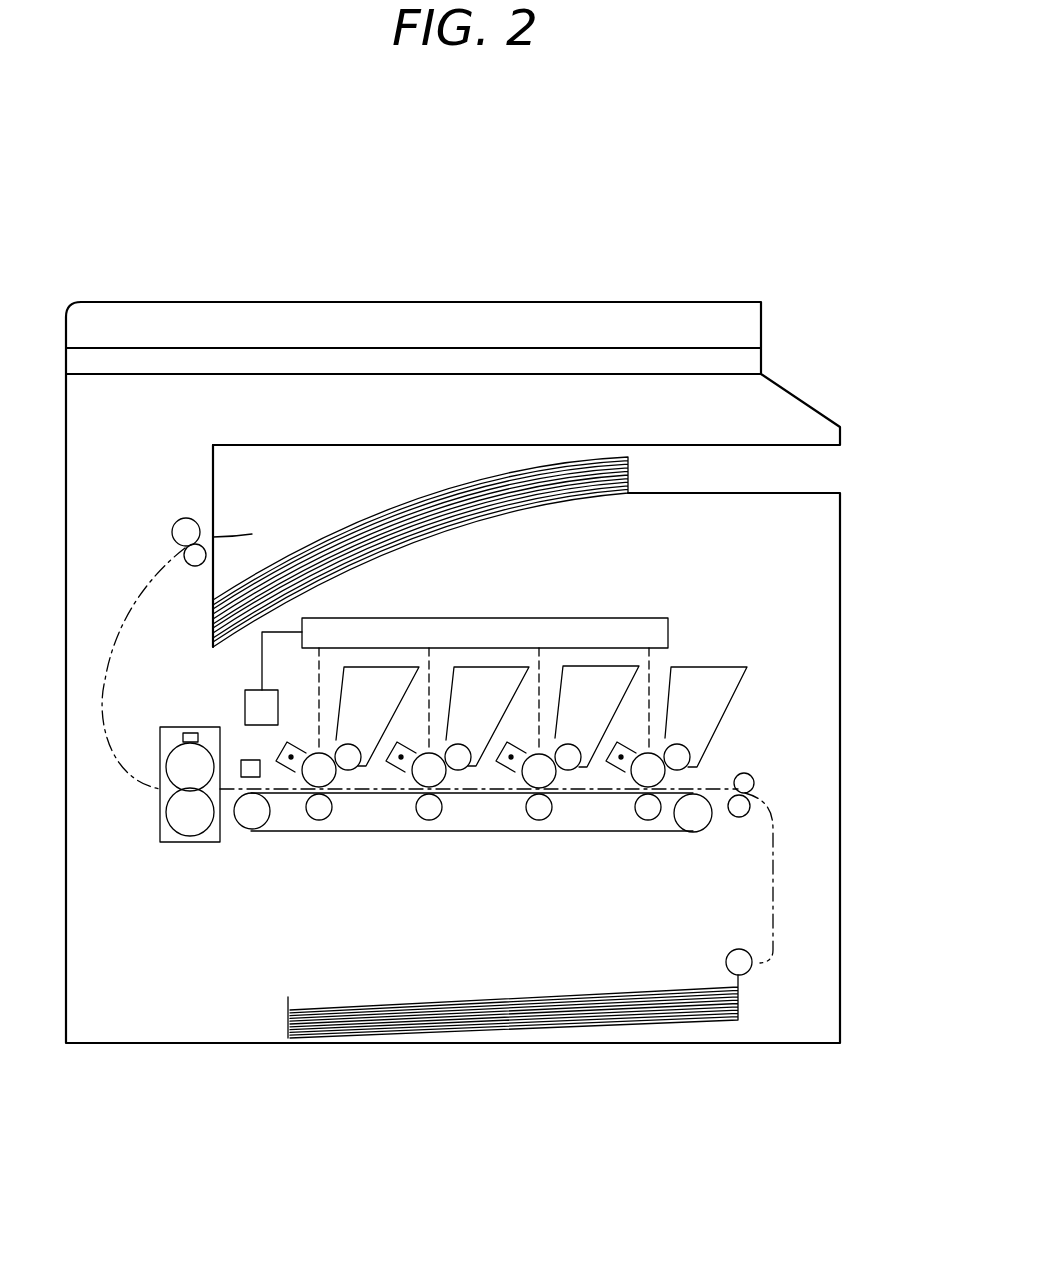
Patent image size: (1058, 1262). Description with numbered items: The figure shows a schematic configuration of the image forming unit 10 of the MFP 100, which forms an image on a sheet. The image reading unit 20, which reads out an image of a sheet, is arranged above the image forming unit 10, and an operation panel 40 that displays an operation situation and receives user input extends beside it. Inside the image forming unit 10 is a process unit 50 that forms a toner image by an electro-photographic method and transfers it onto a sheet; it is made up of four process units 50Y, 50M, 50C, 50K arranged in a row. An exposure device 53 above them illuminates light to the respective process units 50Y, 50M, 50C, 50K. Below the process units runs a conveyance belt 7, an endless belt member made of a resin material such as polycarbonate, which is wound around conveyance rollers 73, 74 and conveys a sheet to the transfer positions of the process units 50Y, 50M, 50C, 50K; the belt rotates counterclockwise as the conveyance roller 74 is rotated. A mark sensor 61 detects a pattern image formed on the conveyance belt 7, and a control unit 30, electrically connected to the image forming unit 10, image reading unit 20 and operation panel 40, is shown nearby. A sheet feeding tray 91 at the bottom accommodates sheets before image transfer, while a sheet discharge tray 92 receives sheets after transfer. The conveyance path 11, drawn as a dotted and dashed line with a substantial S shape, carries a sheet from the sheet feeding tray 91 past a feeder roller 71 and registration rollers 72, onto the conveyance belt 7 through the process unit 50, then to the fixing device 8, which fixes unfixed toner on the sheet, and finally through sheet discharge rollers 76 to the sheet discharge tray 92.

The MFP 100 is at (675, 258).
The image forming unit 10 is at (797, 550).
The image reading unit 20 is at (180, 302).
The operation panel 40 is at (811, 388).
The sheet discharge tray 92 is at (410, 544).
The sheet discharge rollers 76 is at (185, 528).
The exposure device 53 is at (610, 618).
The control unit 30 is at (250, 697).
The mark sensor 61 is at (250, 760).
The fixing device 8 is at (190, 842).
The conveyance belt 7 is at (486, 852).
The conveyance roller 74 is at (252, 818).
The conveyance roller 73 is at (700, 822).
The process unit 50 is at (511, 810).
The process unit 50Y is at (351, 845).
The process unit 50M is at (444, 845).
The process unit 50C is at (551, 845).
The process unit 50K is at (671, 792).
The registration rollers 72 is at (745, 774).
The feeder roller 71 is at (727, 960).
The sheet feeding tray 91 is at (550, 1025).
The conveyance path 11 is at (783, 857).